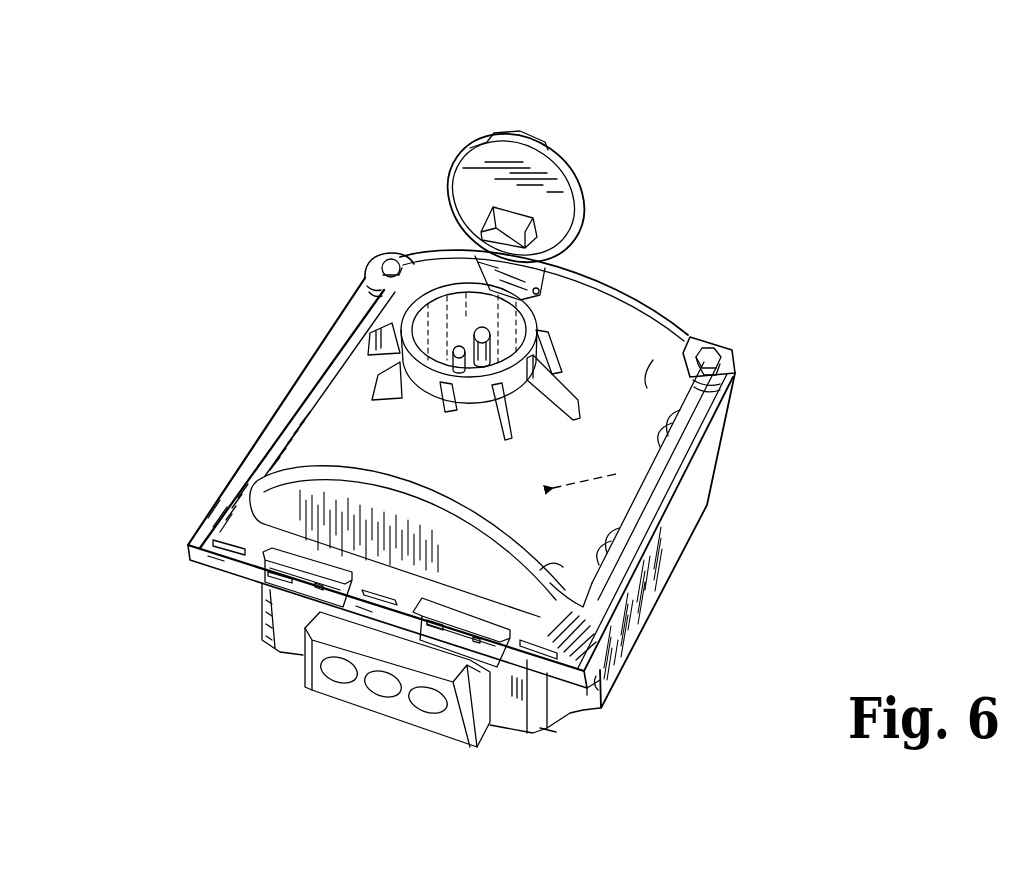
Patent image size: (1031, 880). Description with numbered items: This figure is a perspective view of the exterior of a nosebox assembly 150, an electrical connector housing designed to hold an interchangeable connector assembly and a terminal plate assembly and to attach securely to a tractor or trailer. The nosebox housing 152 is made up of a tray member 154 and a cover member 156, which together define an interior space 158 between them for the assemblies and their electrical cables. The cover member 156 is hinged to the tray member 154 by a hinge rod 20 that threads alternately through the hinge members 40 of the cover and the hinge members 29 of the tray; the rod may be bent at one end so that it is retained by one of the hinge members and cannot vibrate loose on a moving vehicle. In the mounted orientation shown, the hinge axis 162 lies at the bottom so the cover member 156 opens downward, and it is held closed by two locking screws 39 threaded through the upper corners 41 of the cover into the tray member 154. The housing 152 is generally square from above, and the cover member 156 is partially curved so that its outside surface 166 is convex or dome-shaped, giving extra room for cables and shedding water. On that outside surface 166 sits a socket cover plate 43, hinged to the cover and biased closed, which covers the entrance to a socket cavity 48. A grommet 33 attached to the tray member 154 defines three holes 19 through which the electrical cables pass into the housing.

The nosebox assembly 150 is at (140, 167).
The housing 152 is at (183, 343).
The tray member 154 is at (712, 450).
The cover member 156 is at (618, 283).
The interior space 158 is at (663, 480).
The hinge axis 162 is at (583, 683).
The outside surface 166 is at (655, 380).
The locking screws 39 is at (392, 258).
The upper corners 41 is at (366, 263).
The socket cover plate 43 is at (573, 170).
The socket cavity 48 is at (463, 317).
The hinge members 40 is at (217, 567).
The hinge members 29 is at (287, 582).
The grommet 33 is at (430, 730).
The holes 19 is at (427, 713).
The hinge rod 20 is at (622, 692).